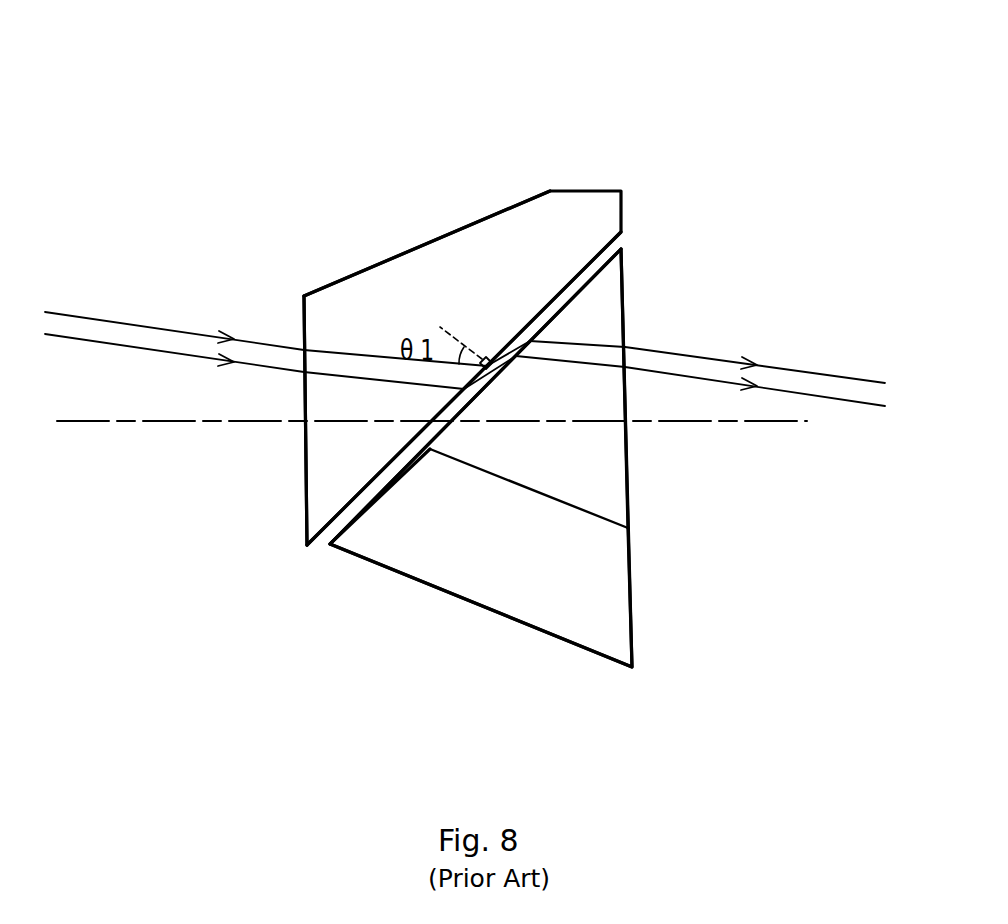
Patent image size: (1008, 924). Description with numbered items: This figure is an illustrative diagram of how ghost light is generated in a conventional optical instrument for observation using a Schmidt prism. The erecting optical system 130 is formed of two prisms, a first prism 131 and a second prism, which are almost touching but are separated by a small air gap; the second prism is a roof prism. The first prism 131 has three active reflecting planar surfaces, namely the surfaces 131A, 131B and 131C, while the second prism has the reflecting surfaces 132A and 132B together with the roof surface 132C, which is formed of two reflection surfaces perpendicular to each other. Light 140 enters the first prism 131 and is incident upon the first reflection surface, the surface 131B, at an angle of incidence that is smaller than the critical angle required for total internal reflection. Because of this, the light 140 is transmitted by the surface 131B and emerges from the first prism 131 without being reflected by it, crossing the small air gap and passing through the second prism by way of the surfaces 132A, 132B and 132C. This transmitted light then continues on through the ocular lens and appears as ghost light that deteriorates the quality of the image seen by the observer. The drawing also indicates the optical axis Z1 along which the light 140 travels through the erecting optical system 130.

The erecting optical system 130 is at (470, 342).
The first prism 131 is at (467, 317).
The reflecting surface 131A is at (304, 470).
The first reflection surface 131B is at (597, 251).
The reflecting surface 131C is at (383, 258).
The reflecting surface 132A is at (596, 276).
The reflecting surface 132B is at (630, 470).
The roof surface 132C is at (618, 585).
The light 140 is at (178, 330).
The optical axis Z1 is at (99, 423).